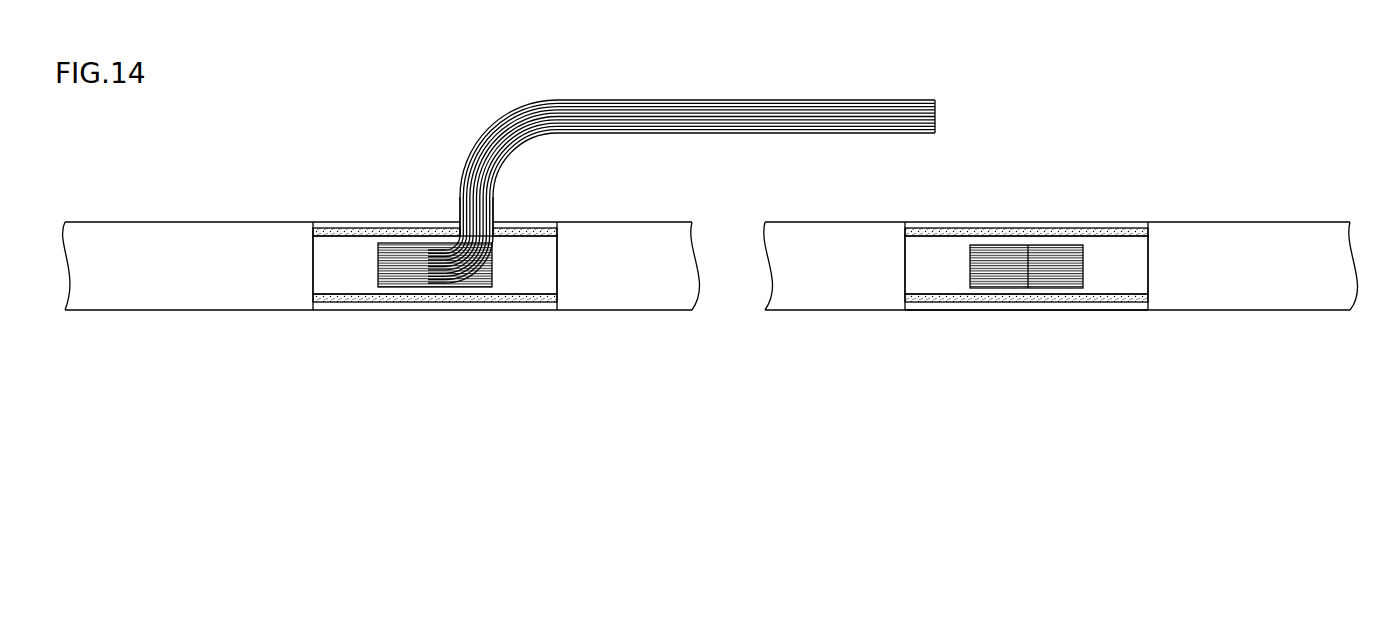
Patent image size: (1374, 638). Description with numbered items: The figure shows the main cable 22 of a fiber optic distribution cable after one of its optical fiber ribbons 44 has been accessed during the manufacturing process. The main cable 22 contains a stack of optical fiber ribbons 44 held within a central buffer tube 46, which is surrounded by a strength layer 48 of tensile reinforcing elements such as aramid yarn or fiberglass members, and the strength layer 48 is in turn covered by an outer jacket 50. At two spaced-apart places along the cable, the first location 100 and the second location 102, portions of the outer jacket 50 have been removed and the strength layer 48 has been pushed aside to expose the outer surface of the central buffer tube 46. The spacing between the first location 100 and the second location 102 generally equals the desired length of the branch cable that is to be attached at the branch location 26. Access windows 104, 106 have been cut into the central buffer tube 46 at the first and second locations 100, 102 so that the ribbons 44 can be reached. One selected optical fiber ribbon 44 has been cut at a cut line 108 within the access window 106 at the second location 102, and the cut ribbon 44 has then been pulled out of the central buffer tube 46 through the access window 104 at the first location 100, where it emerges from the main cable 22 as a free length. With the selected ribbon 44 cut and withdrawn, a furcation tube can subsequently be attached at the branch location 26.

The main cable 22 is at (154, 314).
The branch location 26 is at (379, 171).
The optical fiber ribbon 44 is at (650, 100).
The central buffer tube 46 is at (525, 272).
The strength layer 48 is at (533, 228).
The outer jacket 50 is at (200, 222).
The first location 100 is at (341, 223).
The second location 102 is at (1088, 209).
The access window 104 is at (388, 288).
The access window 106 is at (985, 290).
The cut line 108 is at (1028, 263).